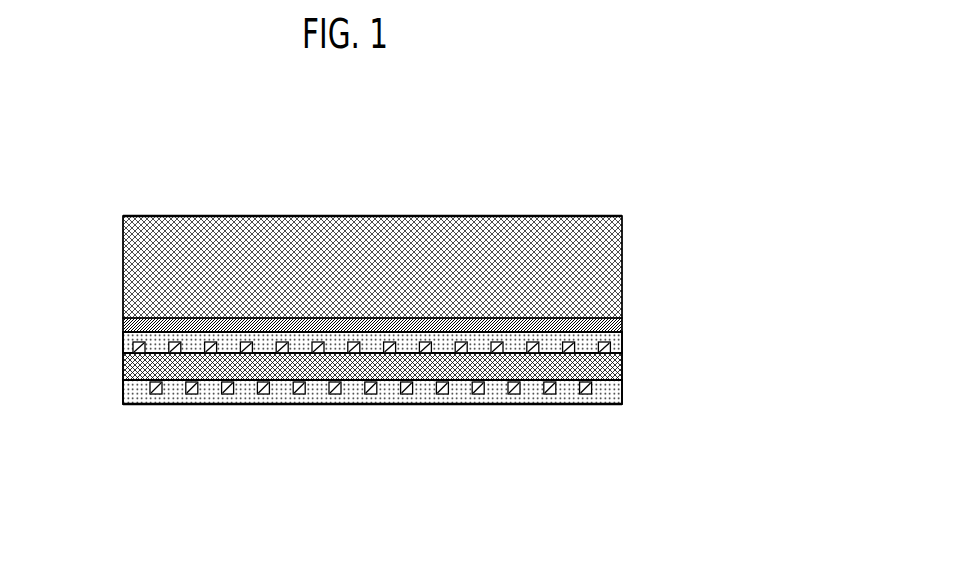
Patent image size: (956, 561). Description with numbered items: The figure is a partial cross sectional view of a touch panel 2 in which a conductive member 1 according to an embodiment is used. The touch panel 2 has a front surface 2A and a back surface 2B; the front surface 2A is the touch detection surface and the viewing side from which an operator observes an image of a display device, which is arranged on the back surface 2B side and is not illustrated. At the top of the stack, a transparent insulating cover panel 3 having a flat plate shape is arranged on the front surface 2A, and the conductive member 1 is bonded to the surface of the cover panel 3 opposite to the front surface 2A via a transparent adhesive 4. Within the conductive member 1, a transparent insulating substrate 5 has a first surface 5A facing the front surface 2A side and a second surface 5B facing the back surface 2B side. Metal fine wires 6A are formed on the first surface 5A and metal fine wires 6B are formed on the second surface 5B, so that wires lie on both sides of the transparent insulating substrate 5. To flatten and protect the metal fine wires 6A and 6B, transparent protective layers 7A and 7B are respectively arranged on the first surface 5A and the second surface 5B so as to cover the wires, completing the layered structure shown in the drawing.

The conductive member 1 is at (640, 332).
The touch panel 2 is at (615, 204).
The front surface 2A is at (462, 215).
The back surface 2B is at (468, 405).
The cover panel 3 is at (621, 248).
The transparent adhesive 4 is at (622, 324).
The transparent insulating substrate 5 is at (122, 369).
The first surface 5A is at (151, 350).
The second surface 5B is at (143, 385).
The metal fine wires 6A is at (210, 344).
The metal fine wires 6B is at (228, 393).
The transparent protective layer 7A is at (123, 342).
The transparent protective layer 7B is at (122, 392).